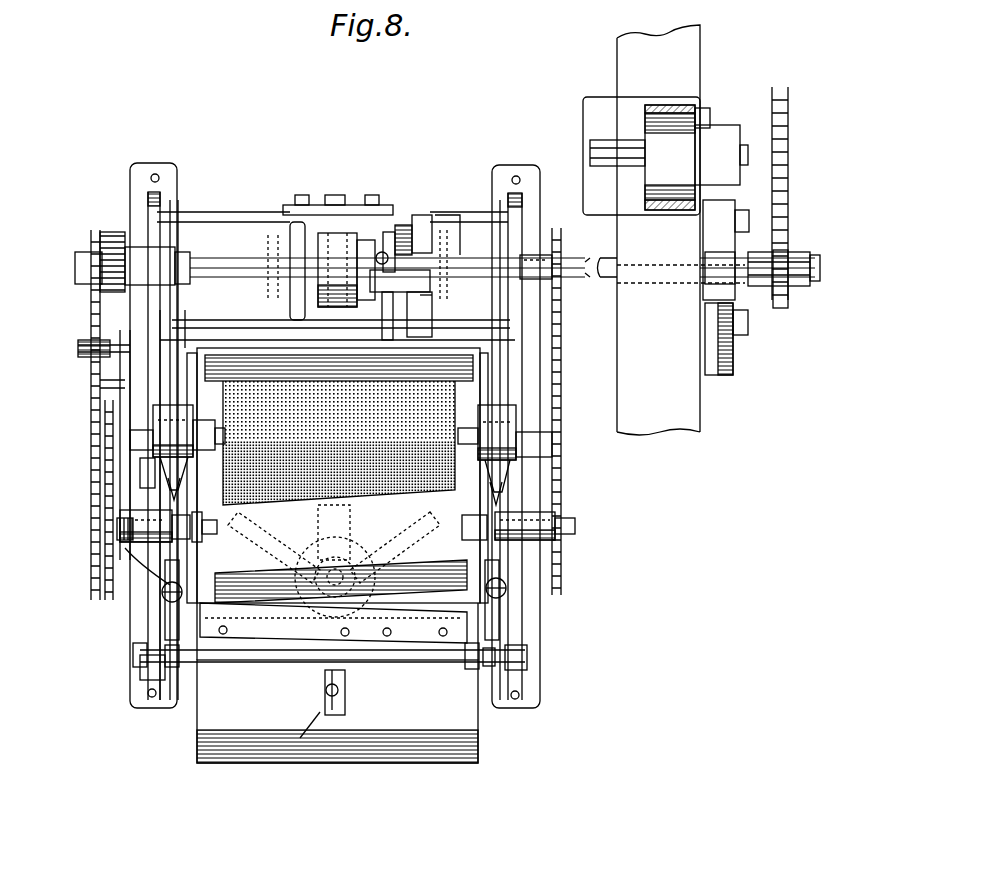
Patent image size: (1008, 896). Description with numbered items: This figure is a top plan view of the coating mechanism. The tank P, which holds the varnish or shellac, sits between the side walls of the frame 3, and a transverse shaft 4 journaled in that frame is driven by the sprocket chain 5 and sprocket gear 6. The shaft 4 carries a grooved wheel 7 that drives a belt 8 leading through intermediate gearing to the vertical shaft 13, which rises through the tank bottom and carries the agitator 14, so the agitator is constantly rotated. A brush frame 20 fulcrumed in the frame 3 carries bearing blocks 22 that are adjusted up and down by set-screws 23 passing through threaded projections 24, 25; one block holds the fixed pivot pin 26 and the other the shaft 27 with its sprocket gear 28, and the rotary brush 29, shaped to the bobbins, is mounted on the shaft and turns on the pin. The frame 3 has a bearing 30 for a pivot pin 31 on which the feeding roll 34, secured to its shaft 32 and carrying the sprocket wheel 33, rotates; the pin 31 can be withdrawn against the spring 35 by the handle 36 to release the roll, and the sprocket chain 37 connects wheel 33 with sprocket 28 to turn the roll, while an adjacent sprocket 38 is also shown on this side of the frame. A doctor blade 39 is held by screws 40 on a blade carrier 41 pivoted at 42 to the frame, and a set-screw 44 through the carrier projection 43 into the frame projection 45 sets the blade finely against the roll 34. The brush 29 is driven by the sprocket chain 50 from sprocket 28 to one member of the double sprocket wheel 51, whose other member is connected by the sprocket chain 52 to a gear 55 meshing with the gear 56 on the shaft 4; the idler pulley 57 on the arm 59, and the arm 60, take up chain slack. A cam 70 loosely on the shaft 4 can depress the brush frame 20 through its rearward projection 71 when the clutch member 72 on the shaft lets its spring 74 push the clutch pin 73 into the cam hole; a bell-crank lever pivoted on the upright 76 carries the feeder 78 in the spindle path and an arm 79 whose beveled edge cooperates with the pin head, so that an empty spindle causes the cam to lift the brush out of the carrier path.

The frame 3 is at (598, 605).
The transverse shaft 4 is at (192, 265).
The sprocket chain 5 is at (770, 118).
The sprocket gear 6 is at (780, 300).
The grooved wheel 7 is at (293, 240).
The belt 8 is at (300, 220).
The vertical shaft 13 is at (335, 580).
The agitator 14 is at (435, 640).
The brush frame 20 is at (455, 255).
The bearing blocks 22 is at (570, 403).
The set-screws 23 is at (588, 498).
The threaded projection 24 is at (505, 475).
The threaded projection 25 is at (165, 465).
The fixed pivot pin 26 is at (520, 440).
The shaft 27 is at (130, 400).
The sprocket gear 28 is at (110, 415).
The rotary brush 29 is at (240, 390).
The bearing 30 is at (150, 585).
The pivot pin 31 is at (140, 612).
The shaft 32 is at (575, 530).
The sprocket wheel 33 is at (562, 560).
The feeding roll 34 is at (450, 620).
The spring 35 is at (120, 555).
The handle 36 is at (130, 576).
The sprocket chain 37 is at (610, 278).
The sprocket 38 is at (556, 260).
The doctor blade 39 is at (440, 615).
The screws 40 is at (235, 615).
The blade carrier 41 is at (290, 650).
The pivot 42 is at (592, 678).
The projection 43 is at (345, 692).
The set-screw 44 is at (332, 712).
The projection 45 is at (305, 735).
The sprocket chain 50 is at (115, 505).
The double sprocket wheel 51 is at (115, 522).
The sprocket chain 52 is at (82, 385).
The gear 55 is at (105, 232).
The gear 56 is at (112, 232).
The idler pulley 57 is at (88, 330).
The arm 59 is at (88, 340).
The arm 60 is at (140, 450).
The cam 70 is at (325, 300).
The rearwardly extending projection 71 is at (262, 265).
The clutch member 72 is at (362, 240).
The clutch pin 73 is at (388, 275).
The spring 74 is at (405, 235).
The upright 76 is at (425, 268).
The feeder 78 is at (455, 215).
The arm 79 is at (428, 310).
The tank P is at (440, 725).